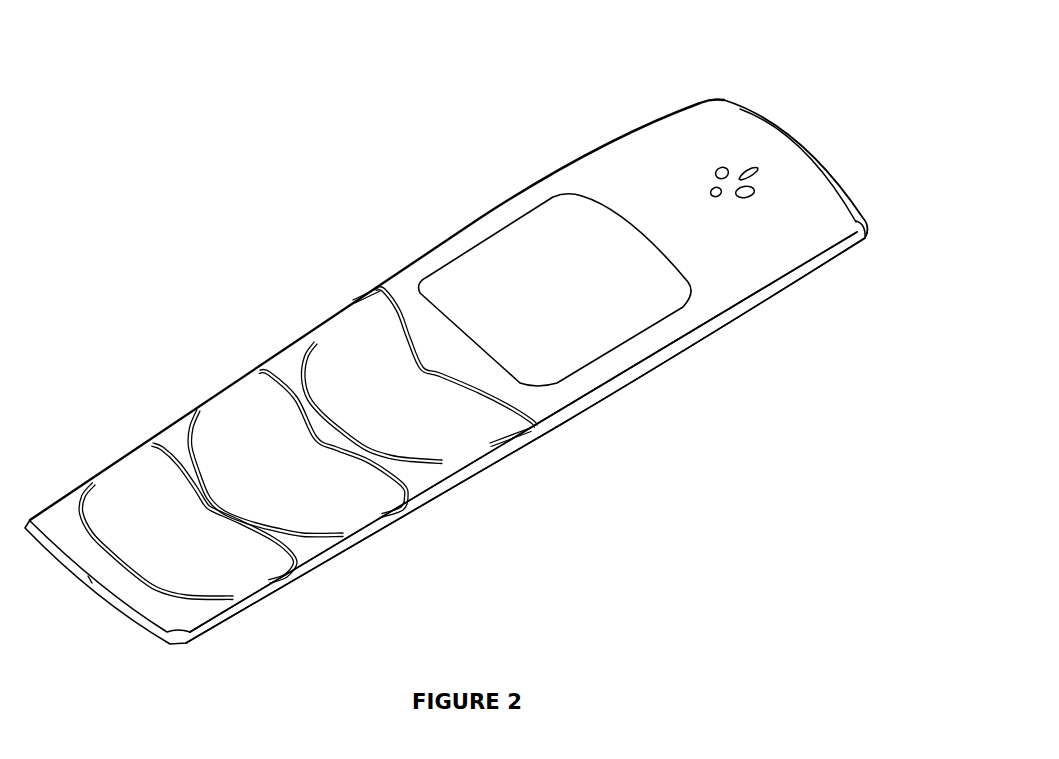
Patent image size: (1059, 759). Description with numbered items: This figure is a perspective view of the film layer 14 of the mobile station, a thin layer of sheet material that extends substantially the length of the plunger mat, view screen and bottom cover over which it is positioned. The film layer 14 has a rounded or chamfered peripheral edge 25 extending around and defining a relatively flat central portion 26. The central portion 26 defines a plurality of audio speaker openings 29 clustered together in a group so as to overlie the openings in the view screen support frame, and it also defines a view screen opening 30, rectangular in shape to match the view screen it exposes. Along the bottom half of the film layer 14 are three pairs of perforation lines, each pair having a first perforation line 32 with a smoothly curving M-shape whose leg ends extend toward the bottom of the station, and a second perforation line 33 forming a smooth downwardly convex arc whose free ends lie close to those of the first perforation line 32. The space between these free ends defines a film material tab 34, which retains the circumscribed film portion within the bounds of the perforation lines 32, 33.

The film layer 14 is at (778, 77).
The peripheral edge 25 is at (632, 380).
The central portion 26 is at (760, 253).
The audio speaker openings 29 is at (758, 168).
The view screen opening 30 is at (640, 230).
The first perforation line 32 is at (257, 368).
The second perforation line 33 is at (147, 572).
The film material tab 34 is at (203, 404).